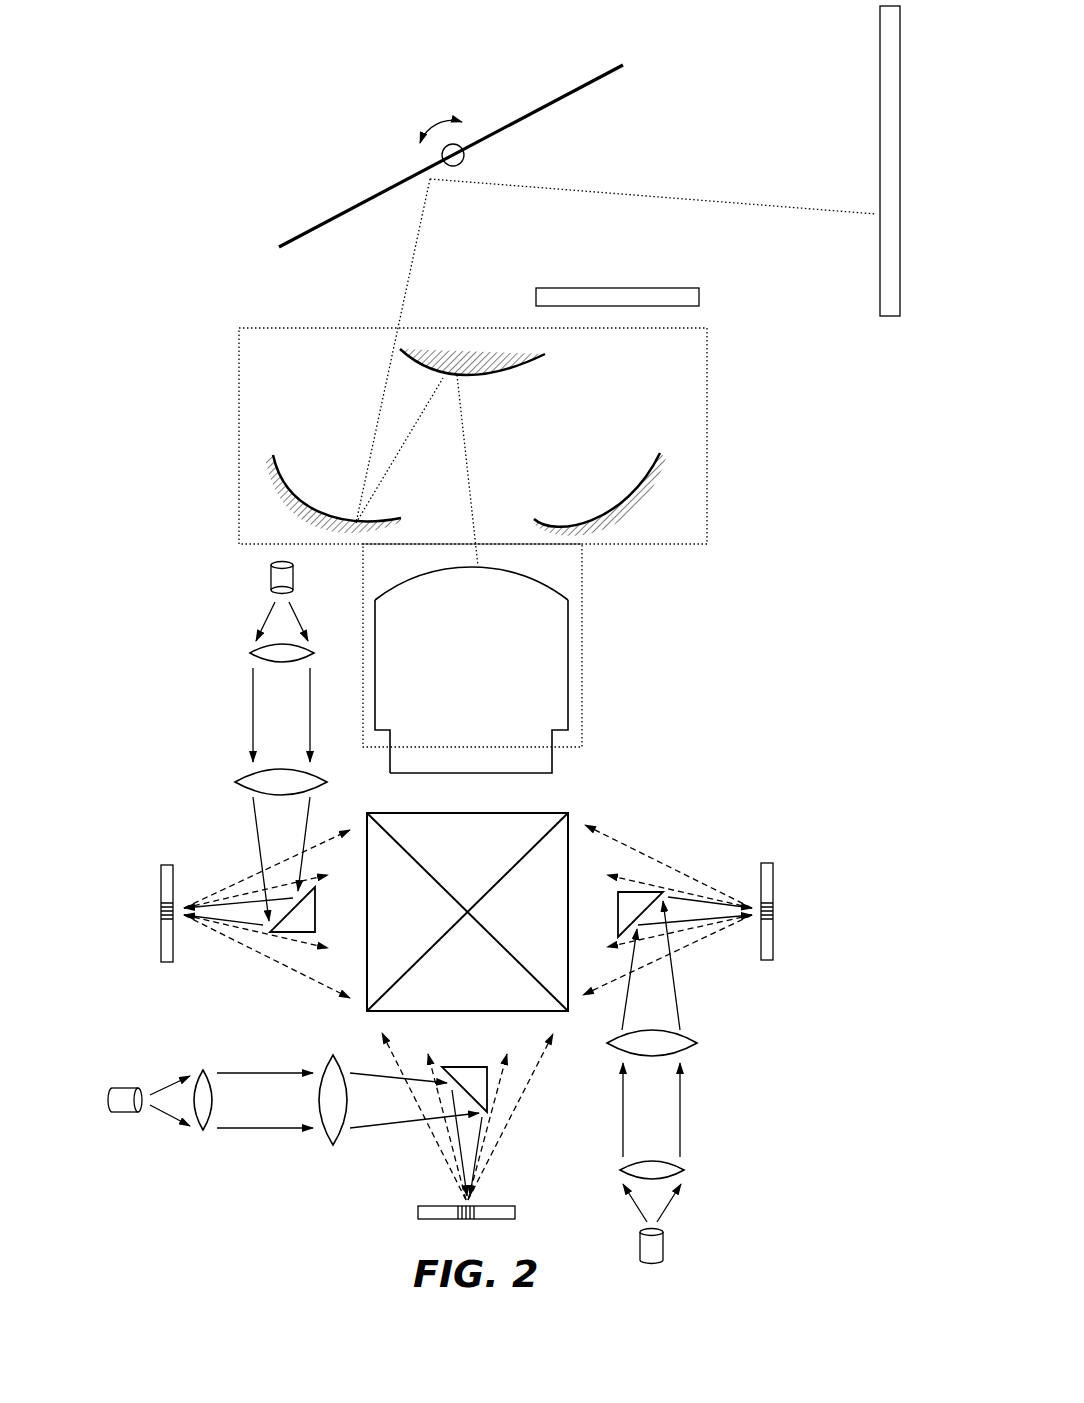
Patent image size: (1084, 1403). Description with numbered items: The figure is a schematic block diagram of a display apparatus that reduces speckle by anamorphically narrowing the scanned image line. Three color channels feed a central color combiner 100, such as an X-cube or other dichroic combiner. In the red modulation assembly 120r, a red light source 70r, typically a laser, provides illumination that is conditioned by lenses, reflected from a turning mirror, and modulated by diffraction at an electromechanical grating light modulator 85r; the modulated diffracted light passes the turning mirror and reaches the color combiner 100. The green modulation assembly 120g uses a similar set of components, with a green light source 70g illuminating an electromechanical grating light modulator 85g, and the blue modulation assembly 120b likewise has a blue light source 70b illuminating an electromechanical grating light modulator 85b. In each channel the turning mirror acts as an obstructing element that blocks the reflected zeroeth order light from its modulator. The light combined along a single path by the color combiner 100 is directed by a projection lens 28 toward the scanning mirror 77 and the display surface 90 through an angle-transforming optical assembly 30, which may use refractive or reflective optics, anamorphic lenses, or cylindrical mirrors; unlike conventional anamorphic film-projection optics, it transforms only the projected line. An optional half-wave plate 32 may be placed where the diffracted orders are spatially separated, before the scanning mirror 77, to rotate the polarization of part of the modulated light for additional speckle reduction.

The projection lens 28 is at (580, 623).
The angle-transforming optical assembly 30 is at (707, 397).
The half-wave plate 32 is at (699, 298).
The scanning mirror 77 is at (321, 229).
The display surface 90 is at (876, 111).
The color combiner 100 is at (527, 813).
The blue light source 70b is at (268, 577).
The green light source 70g is at (148, 1070).
The red light source 70r is at (663, 1243).
The electromechanical grating light modulator 85b is at (157, 898).
The electromechanical grating light modulator 85g is at (417, 1210).
The electromechanical grating light modulator 85r is at (773, 942).
The blue modulation assembly 120b is at (212, 687).
The green modulation assembly 120g is at (217, 1177).
The red modulation assembly 120r is at (672, 780).